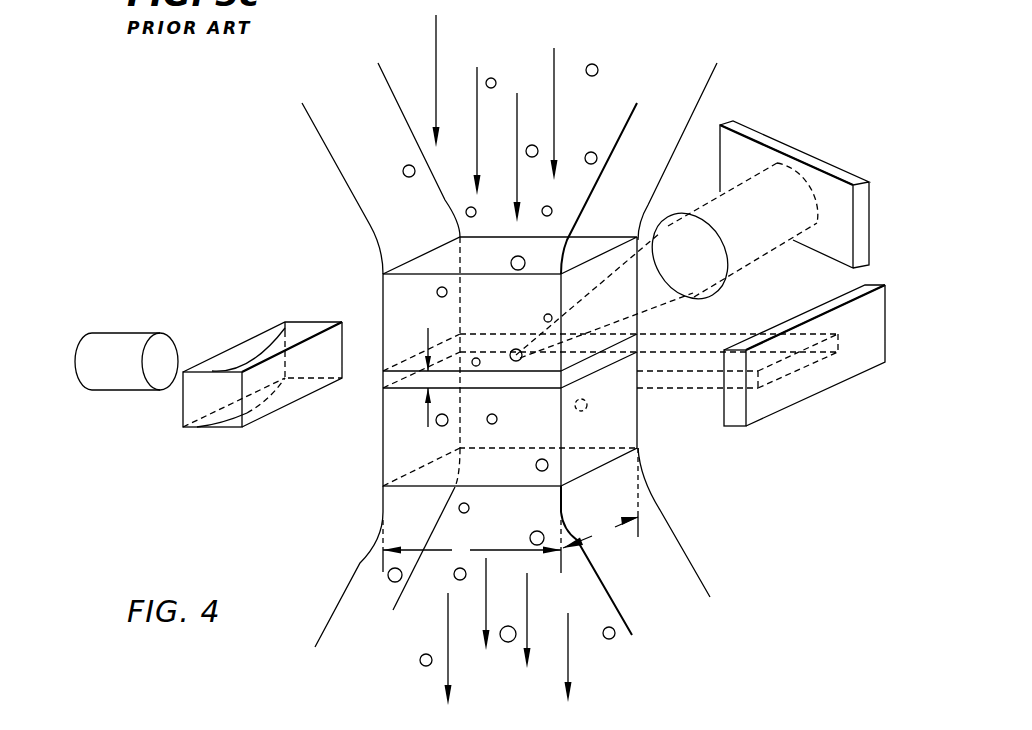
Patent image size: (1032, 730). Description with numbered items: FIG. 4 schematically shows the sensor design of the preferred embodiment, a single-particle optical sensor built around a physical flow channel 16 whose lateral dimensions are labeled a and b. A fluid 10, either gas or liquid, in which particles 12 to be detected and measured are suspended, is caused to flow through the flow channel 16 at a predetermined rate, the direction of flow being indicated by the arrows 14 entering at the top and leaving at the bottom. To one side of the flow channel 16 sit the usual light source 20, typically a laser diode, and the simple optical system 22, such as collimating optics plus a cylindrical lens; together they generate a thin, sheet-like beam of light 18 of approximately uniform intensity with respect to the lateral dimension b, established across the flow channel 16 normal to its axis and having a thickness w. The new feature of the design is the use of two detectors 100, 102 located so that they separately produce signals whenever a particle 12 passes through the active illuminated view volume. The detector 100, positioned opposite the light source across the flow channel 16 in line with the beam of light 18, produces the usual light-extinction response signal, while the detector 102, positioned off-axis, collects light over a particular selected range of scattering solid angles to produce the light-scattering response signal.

The fluid 10 is at (570, 352).
The particles 12 is at (594, 153).
The arrows 14 is at (477, 90).
The flow channel 16 is at (383, 300).
The sheet-like beam of light 18 is at (513, 383).
The light source 20 is at (123, 342).
The optical system 22 is at (233, 428).
The detector 100 is at (853, 377).
The detector 102 is at (775, 138).